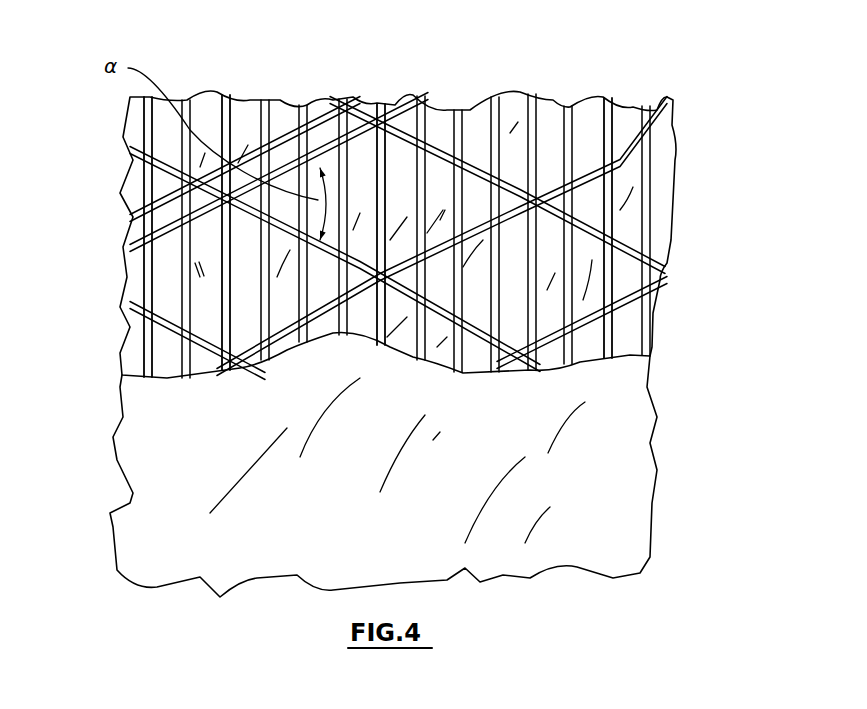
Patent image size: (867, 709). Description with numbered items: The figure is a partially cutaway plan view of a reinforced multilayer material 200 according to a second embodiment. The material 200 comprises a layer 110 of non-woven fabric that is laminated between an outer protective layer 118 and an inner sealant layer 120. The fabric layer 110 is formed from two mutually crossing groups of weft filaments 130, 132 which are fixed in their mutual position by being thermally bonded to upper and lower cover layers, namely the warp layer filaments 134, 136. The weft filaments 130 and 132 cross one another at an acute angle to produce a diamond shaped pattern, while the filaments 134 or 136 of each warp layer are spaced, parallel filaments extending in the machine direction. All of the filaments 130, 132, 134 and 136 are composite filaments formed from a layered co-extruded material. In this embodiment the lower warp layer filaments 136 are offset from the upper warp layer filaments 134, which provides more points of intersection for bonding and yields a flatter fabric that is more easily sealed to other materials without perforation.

The layer of non-woven fabric 110 is at (398, 301).
The outer protective layer 118 is at (630, 475).
The inner sealant layer 120 is at (548, 120).
The weft filaments 130 is at (135, 155).
The weft filaments 132 is at (133, 246).
The upper warp layer filaments 134 is at (226, 107).
The lower warp layer filaments 136 is at (187, 103).
The reinforced multilayer material layer 200 is at (397, 205).